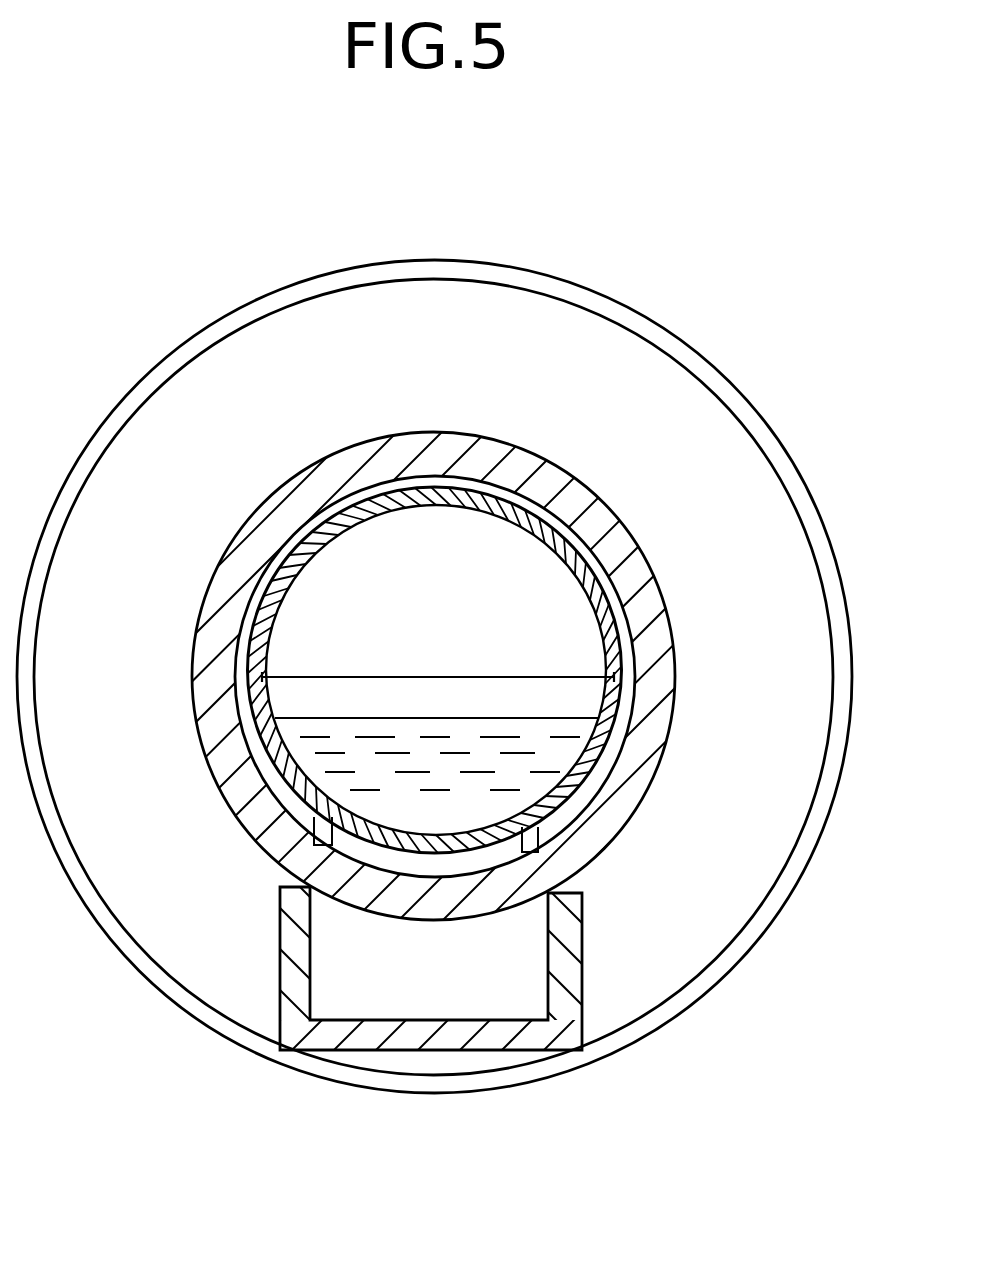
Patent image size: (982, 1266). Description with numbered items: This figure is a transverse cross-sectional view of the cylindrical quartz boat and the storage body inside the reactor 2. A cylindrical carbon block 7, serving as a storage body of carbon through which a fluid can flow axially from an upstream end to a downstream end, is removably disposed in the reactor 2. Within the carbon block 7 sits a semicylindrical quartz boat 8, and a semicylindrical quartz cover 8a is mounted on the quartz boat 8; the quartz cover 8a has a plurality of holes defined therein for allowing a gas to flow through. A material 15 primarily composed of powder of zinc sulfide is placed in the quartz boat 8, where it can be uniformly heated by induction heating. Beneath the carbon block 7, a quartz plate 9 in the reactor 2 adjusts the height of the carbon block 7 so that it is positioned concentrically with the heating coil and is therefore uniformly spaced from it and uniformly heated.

The reactor 2 is at (546, 275).
The cylindrical carbon block 7 is at (543, 460).
The semicylindrical quartz boat 8 is at (240, 699).
The semicylindrical quartz cover 8a is at (262, 576).
The material 15 is at (466, 718).
The quartz plate 9 is at (283, 1006).